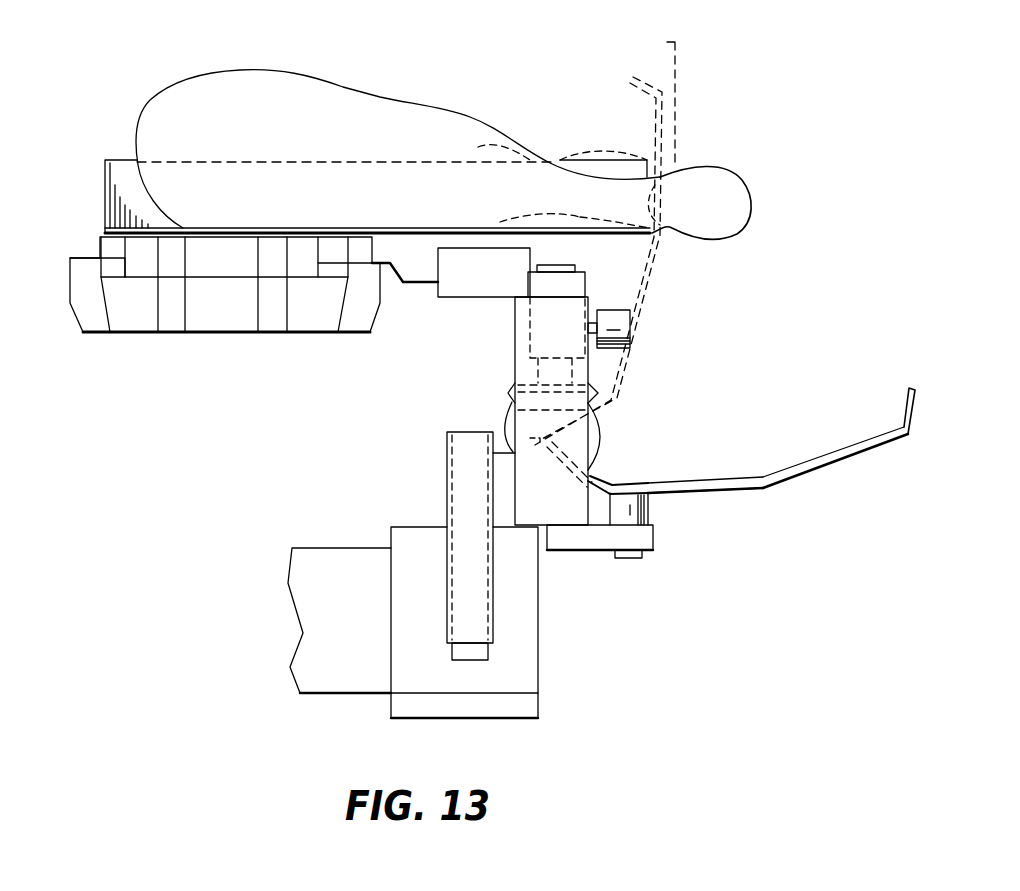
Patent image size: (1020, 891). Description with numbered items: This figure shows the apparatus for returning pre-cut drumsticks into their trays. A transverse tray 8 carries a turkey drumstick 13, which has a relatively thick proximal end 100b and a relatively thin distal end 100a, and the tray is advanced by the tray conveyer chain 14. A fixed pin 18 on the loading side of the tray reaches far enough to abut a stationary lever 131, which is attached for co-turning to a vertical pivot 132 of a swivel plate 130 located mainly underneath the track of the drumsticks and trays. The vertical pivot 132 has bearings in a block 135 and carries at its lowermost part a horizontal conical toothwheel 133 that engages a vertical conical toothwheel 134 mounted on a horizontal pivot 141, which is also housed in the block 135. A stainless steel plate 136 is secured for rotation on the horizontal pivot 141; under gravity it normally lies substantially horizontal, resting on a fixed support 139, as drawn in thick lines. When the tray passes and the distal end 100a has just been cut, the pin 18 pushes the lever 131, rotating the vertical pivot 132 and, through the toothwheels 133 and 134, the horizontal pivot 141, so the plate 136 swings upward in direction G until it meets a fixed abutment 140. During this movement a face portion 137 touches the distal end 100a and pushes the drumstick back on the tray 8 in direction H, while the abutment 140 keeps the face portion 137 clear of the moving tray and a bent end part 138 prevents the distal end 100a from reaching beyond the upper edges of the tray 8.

The transverse tray 8 is at (135, 200).
The turkey drumstick 13 is at (398, 99).
The tray conveyer chain 14 is at (170, 351).
The fixed pin 18 is at (423, 263).
The distal end 100a is at (718, 187).
The proximal end 100b is at (203, 100).
The swivel plate 130 is at (440, 464).
The stationary lever 131 is at (562, 266).
The vertical pivot 132 is at (570, 272).
The horizontal conical toothwheel 133 is at (600, 418).
The vertical conical toothwheel 134 is at (598, 432).
The block 135 is at (593, 478).
The stainless steel plate 136 is at (730, 490).
The face portion 137 is at (805, 463).
The bent end part 138 is at (907, 403).
The fixed support 139 is at (648, 507).
The fixed abutment 140 is at (627, 325).
The horizontal pivot 141 is at (600, 438).
The direction H is at (408, 38).
The direction G is at (774, 250).